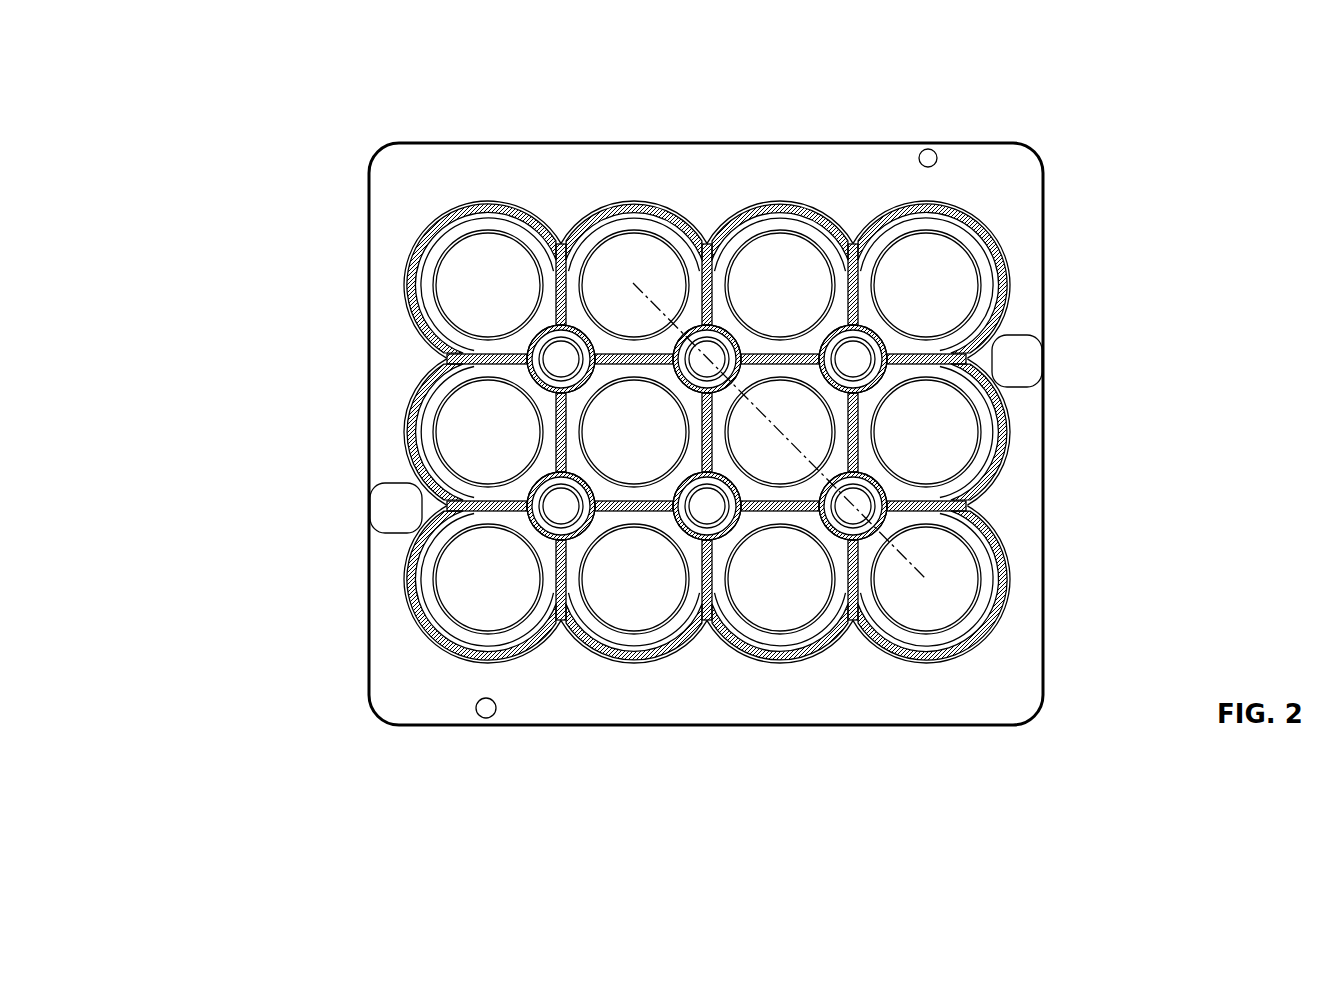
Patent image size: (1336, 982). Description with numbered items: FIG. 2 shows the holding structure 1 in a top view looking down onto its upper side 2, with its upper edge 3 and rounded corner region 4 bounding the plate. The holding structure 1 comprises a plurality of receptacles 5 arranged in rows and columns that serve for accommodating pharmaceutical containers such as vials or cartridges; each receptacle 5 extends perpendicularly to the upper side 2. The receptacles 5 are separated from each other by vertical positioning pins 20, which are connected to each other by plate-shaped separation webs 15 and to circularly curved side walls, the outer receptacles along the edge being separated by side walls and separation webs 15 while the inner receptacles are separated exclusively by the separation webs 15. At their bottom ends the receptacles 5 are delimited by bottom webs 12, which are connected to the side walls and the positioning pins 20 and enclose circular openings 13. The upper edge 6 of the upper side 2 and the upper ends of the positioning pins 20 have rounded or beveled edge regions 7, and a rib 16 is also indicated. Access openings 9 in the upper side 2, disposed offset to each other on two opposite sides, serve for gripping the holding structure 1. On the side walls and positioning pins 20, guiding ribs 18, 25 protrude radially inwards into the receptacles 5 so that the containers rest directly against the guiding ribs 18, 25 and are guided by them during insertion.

The holding structure 1 is at (172, 104).
The upper side 2 is at (636, 193).
The upper edge 3 is at (661, 261).
The rounded corner region 4 is at (373, 148).
The receptacle 5 is at (825, 253).
The upper edge 6 is at (488, 204).
The rounded edge region 7 is at (578, 228).
The access opening 9 is at (400, 507).
The bottom web 12 is at (777, 227).
The opening 13 is at (755, 283).
The separation webs 15 is at (857, 270).
The rib 16 is at (855, 288).
The guiding rib 18 is at (413, 287).
The positioning pin 20 is at (548, 358).
The guiding rib 25 is at (540, 376).